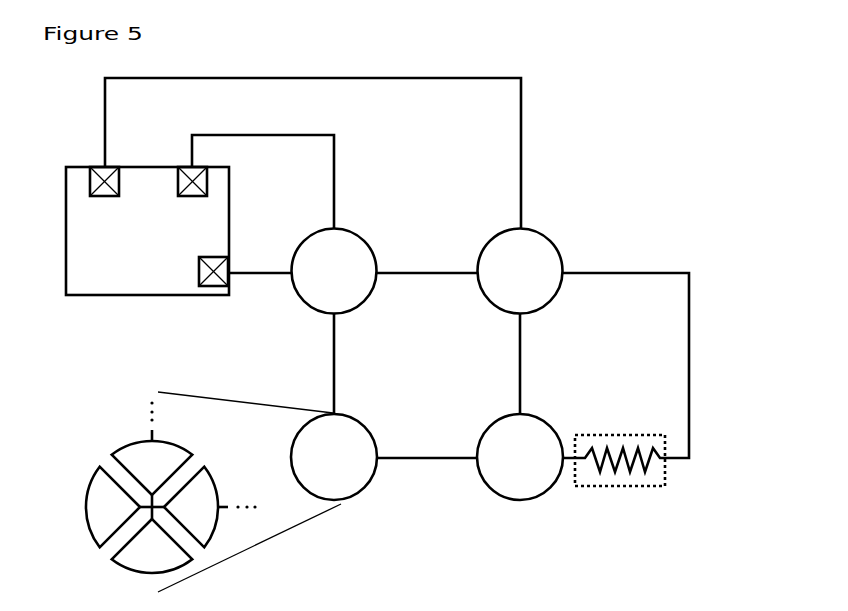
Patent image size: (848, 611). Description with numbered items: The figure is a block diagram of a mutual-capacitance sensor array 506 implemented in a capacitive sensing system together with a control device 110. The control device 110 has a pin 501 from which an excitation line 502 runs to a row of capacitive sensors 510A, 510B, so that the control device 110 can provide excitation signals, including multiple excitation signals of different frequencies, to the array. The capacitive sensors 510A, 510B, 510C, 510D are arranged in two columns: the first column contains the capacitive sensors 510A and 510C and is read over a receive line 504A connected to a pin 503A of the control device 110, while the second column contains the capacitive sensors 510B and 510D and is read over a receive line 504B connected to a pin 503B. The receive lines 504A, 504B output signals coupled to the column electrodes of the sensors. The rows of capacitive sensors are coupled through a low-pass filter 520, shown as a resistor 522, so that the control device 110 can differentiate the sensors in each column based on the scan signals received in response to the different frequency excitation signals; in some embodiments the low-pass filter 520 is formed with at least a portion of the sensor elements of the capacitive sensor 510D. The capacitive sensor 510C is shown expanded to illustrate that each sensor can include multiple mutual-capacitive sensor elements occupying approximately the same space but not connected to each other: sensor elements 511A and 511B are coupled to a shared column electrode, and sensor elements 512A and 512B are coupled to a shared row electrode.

The control device 110 is at (201, 252).
The pin 501 is at (200, 270).
The excitation line 502 is at (260, 275).
The pin 503A is at (184, 167).
The pin 503B is at (102, 167).
The receive line 504A is at (312, 181).
The receive line 504B is at (313, 140).
The mutual-capacitance sensor array 506 is at (709, 204).
The capacitive sensor 510A is at (355, 280).
The capacitive sensor 510B is at (541, 280).
The capacitive sensor 510C is at (355, 466).
The capacitive sensor 510D is at (542, 466).
The sensor element 511A is at (175, 468).
The sensor element 511B is at (175, 566).
The sensor element 512A is at (132, 514).
The sensor element 512B is at (217, 514).
The low-pass filter 520 is at (625, 500).
The resistor 522 is at (608, 449).